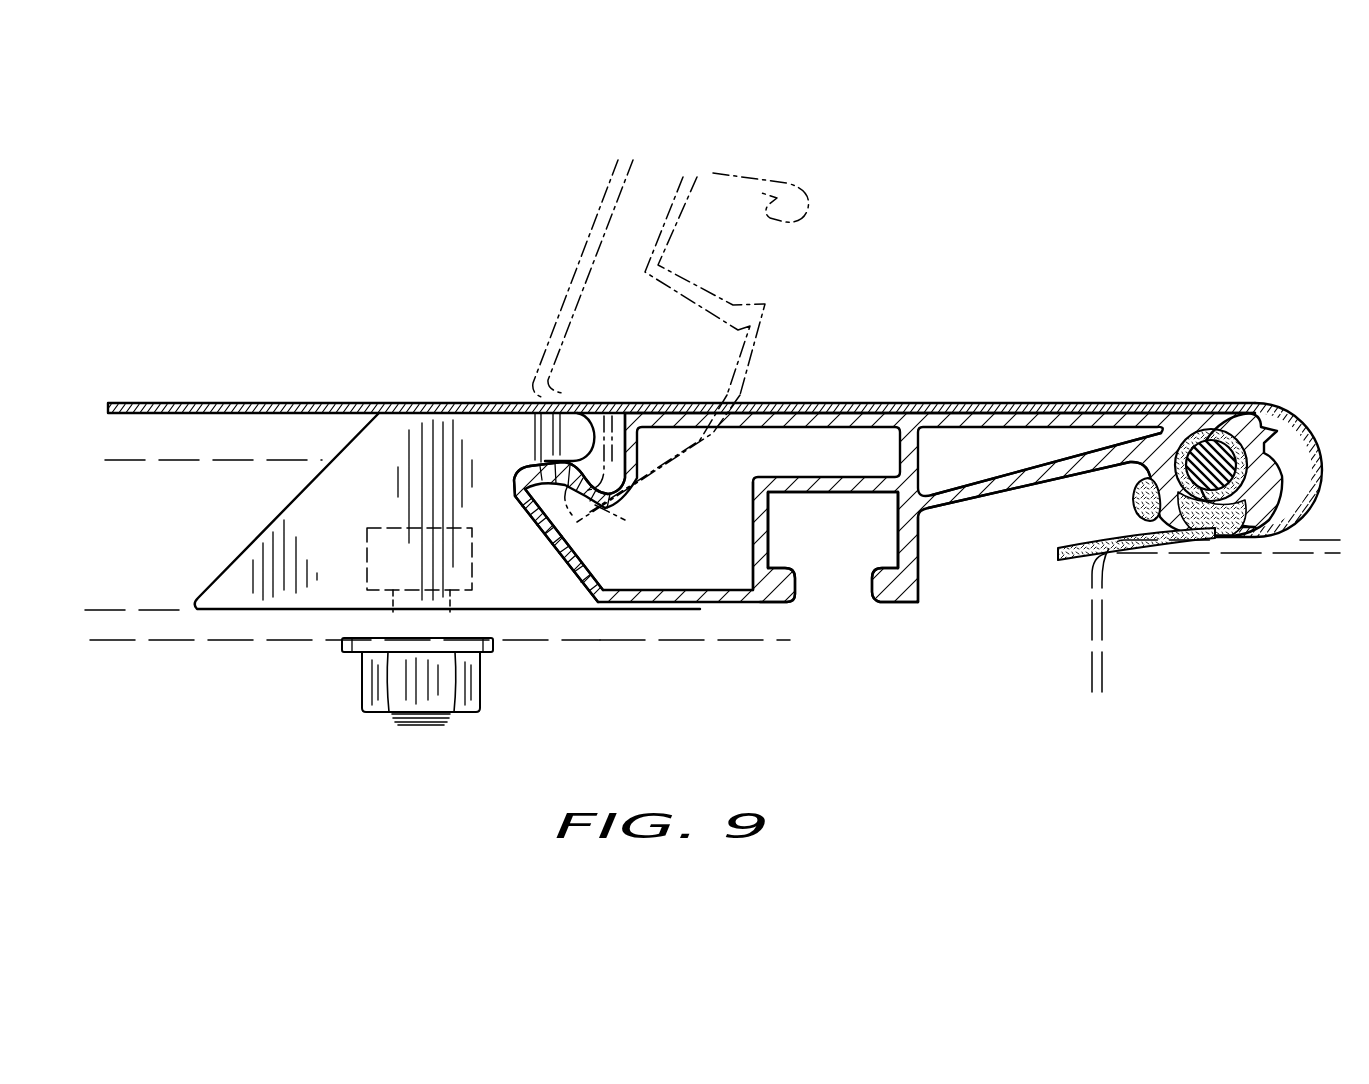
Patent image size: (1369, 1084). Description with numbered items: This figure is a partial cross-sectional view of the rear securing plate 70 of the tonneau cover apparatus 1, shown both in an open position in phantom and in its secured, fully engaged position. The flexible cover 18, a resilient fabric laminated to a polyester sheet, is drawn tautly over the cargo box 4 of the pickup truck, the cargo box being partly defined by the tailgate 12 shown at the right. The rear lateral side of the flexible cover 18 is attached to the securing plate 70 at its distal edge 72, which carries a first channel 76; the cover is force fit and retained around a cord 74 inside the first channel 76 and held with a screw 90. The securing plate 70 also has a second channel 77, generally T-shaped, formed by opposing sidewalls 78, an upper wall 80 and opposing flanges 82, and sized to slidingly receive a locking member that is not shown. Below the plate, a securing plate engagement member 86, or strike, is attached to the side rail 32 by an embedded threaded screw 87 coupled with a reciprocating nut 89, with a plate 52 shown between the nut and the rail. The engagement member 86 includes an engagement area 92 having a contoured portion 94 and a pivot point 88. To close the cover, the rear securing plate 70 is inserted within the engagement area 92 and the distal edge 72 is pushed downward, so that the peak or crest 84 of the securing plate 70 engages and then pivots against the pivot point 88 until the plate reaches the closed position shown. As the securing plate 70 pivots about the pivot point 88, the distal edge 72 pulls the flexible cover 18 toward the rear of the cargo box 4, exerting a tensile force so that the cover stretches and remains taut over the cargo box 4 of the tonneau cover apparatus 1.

The tonneau cover apparatus 1 is at (334, 284).
The cargo box 4 is at (1030, 645).
The tailgate 12 is at (1320, 540).
The flexible cover 18 is at (353, 402).
The side rail 32 is at (192, 654).
The fastener plate 52 is at (533, 644).
The rear securing plate 70 is at (572, 236).
The distal edge 72 is at (1166, 386).
The cord 74 is at (1135, 476).
The first channel 76 is at (1262, 440).
The second channel 77 is at (868, 564).
The opposing sidewalls 78 is at (770, 544).
The upper wall 80 is at (838, 502).
The opposing flanges 82 is at (790, 604).
The peak or crest 84 is at (584, 532).
The securing plate engagement member 86 is at (250, 545).
The threaded screw 87 is at (440, 724).
The pivot point 88 is at (523, 468).
The nut 89 is at (358, 688).
The screw 90 is at (1140, 506).
The engagement area 92 is at (573, 431).
The contoured portion 94 is at (521, 460).